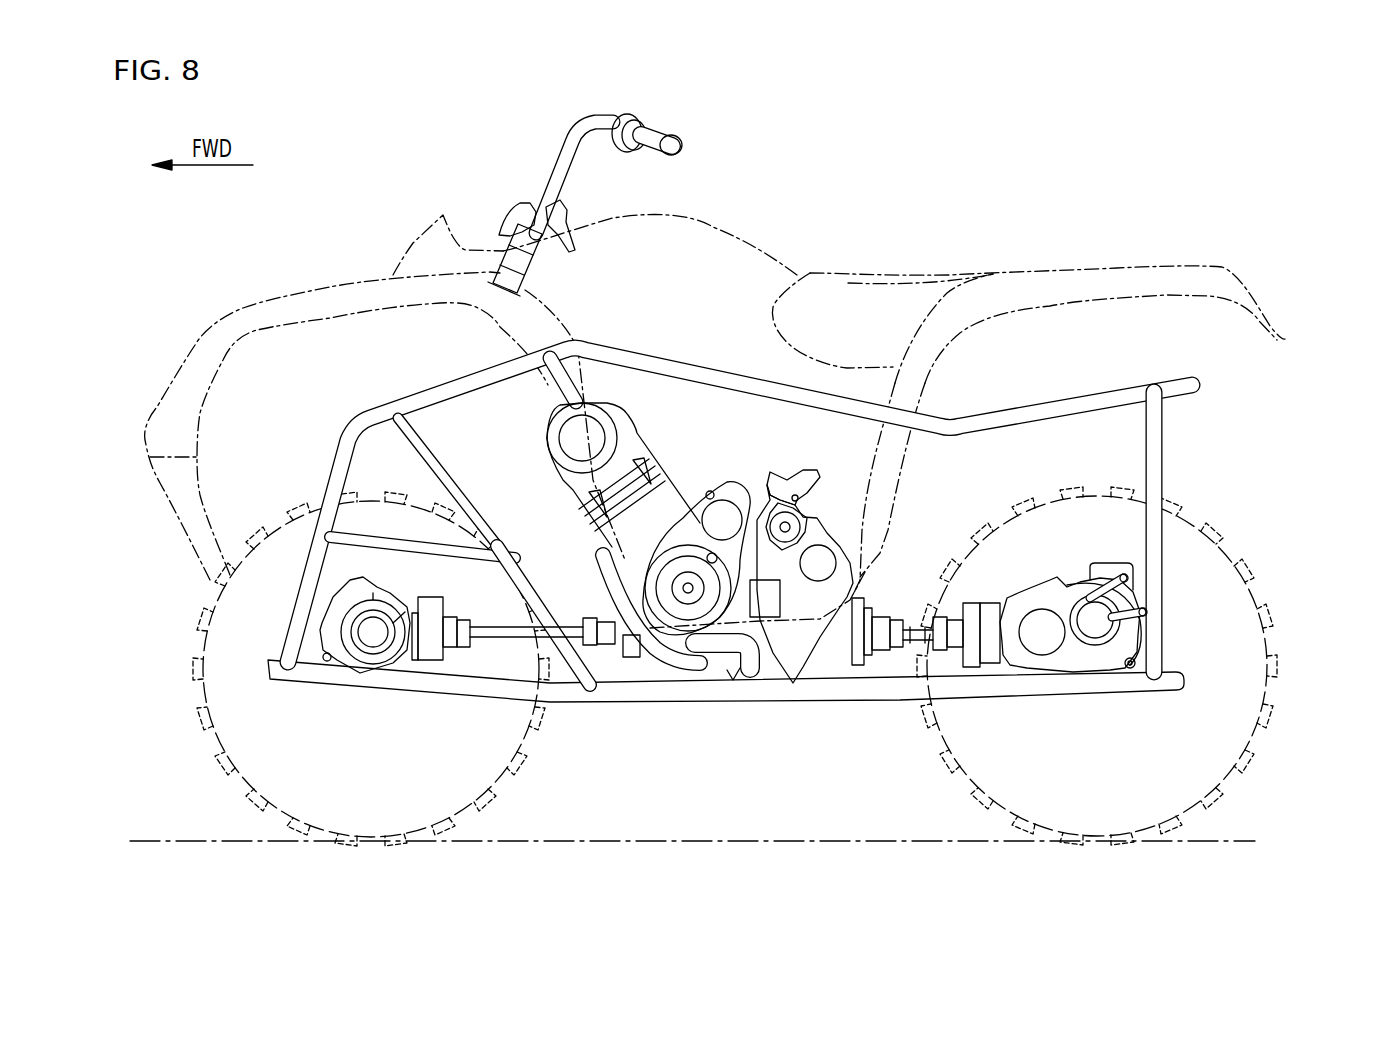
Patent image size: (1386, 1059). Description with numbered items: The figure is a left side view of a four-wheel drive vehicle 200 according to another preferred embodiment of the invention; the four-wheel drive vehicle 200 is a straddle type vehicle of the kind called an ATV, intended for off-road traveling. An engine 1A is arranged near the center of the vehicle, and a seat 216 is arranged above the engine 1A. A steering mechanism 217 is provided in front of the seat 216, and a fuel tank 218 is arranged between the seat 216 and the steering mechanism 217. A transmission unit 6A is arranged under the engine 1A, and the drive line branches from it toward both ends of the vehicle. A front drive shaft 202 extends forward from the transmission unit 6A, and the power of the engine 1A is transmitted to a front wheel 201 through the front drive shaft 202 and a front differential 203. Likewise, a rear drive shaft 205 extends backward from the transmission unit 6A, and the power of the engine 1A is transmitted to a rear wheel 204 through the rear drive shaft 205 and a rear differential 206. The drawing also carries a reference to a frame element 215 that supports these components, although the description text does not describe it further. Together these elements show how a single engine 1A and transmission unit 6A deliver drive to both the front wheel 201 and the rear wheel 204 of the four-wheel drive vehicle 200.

The four-wheel drive vehicle 200 is at (1041, 189).
The front wheel 201 is at (218, 743).
The front drive shaft 202 is at (533, 678).
The front differential 203 is at (373, 592).
The rear wheel 204 is at (1267, 640).
The rear drive shaft 205 is at (915, 628).
The rear differential 206 is at (1093, 587).
The body frame 215 is at (683, 693).
The seat 216 is at (835, 298).
The steering mechanism 217 is at (653, 131).
The fuel tank 218 is at (700, 245).
The engine 1A is at (633, 437).
The transmission unit 6A is at (757, 607).